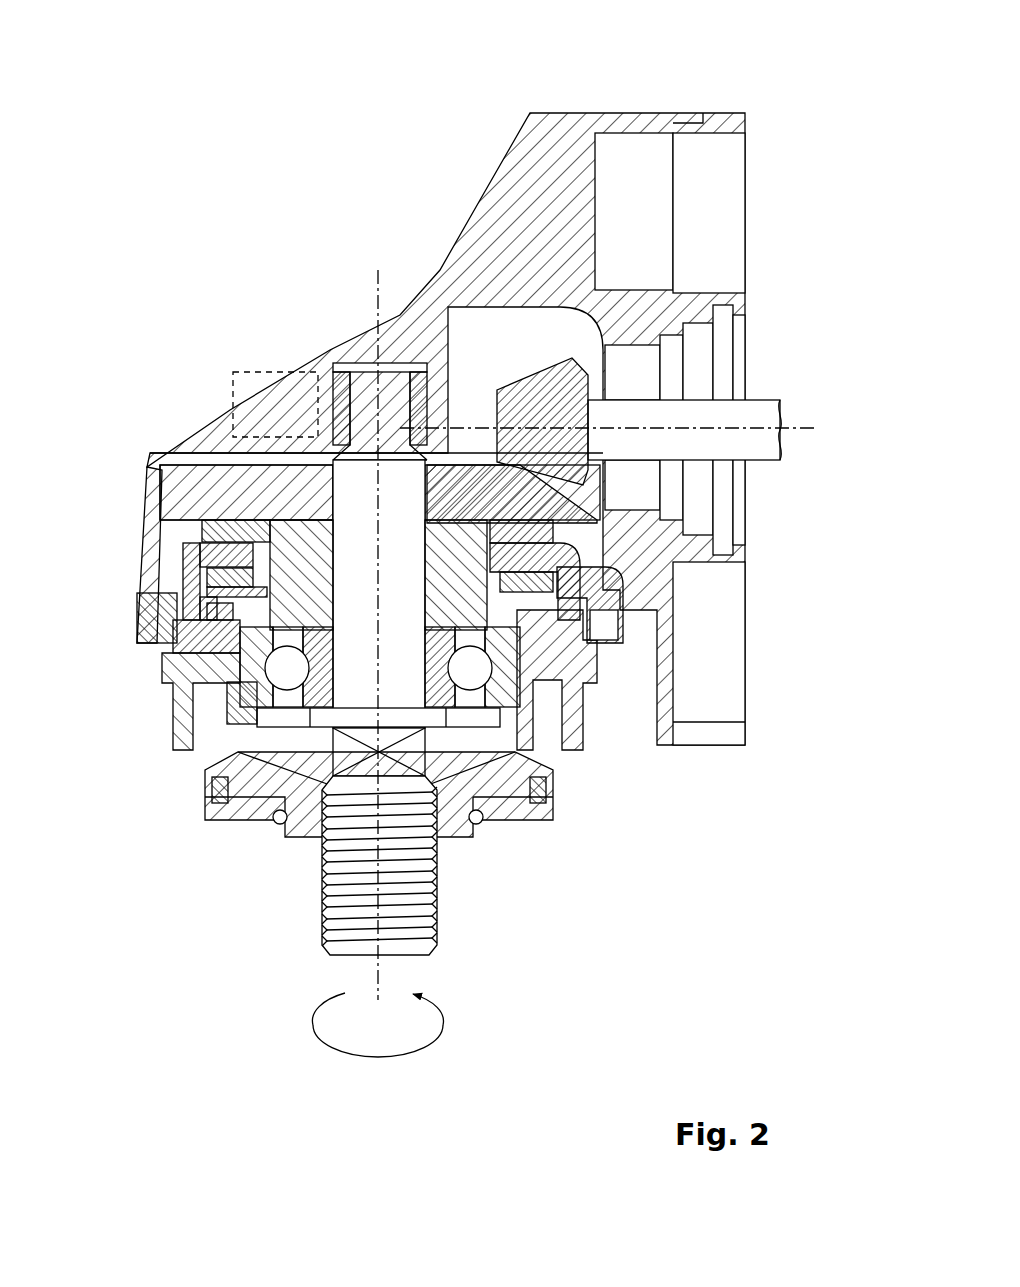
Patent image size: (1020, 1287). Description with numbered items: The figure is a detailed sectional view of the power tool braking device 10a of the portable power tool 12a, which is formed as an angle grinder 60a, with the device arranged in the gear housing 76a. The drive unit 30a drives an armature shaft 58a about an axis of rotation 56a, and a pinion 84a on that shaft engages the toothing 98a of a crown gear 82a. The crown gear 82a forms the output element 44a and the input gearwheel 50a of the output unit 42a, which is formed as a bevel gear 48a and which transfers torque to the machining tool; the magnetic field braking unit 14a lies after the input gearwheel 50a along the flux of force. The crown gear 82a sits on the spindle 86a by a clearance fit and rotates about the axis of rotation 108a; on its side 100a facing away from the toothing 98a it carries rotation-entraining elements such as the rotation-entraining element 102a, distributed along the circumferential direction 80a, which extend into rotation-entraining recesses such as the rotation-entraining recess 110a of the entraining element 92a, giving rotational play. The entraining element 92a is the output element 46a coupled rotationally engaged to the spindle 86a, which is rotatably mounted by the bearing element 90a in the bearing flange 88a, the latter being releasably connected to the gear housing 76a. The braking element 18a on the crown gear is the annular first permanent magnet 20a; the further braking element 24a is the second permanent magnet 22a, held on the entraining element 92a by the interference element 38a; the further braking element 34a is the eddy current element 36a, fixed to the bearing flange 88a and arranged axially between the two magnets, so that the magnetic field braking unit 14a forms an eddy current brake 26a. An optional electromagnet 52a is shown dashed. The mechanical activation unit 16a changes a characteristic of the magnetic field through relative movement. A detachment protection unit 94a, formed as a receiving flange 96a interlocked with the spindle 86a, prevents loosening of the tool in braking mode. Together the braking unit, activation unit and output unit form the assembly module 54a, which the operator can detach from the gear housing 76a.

The power tool braking device 10a is at (204, 140).
The portable power tool 12a is at (712, 70).
The angle grinder 60a is at (718, 82).
The gear housing 76a is at (566, 128).
The pinion 84a is at (522, 415).
The drive unit 30a is at (766, 345).
The rotation-entraining element 102a is at (366, 364).
The output element 44a is at (275, 462).
The input gearwheel 50a is at (273, 460).
The rotation-entraining recess 110a is at (302, 462).
The side of the crown gear facing away from the toothing 100a is at (242, 465).
The toothing 98a is at (216, 470).
The mechanical activation unit 16a is at (457, 400).
The braking element 18a is at (178, 480).
The first permanent magnet 20a is at (180, 482).
The crown gear 82a is at (142, 488).
The magnetic field braking unit 14a is at (140, 495).
The eddy current brake 26a is at (143, 526).
The axis of rotation 56a is at (800, 440).
The armature shaft 58a is at (748, 455).
The further braking element 34a is at (230, 535).
The eddy current element 36a is at (225, 560).
The second permanent magnet 22a is at (262, 572).
The electromagnet 52a is at (135, 620).
The further braking element 24a is at (230, 625).
The interference element 38a is at (235, 612).
The output element 46a is at (240, 665).
The entraining element 92a is at (178, 705).
The bearing flange 88a is at (180, 700).
The bearing element 90a is at (500, 690).
The bevel gear 48a is at (148, 783).
The output unit 42a is at (163, 800).
The assembly module 54a is at (620, 790).
The receiving flange 96a is at (250, 866).
The detachment protection unit 94a is at (263, 880).
The spindle 86a is at (425, 907).
The axis of rotation of the crown gear 108a is at (378, 977).
The circumferential direction 80a is at (378, 1080).